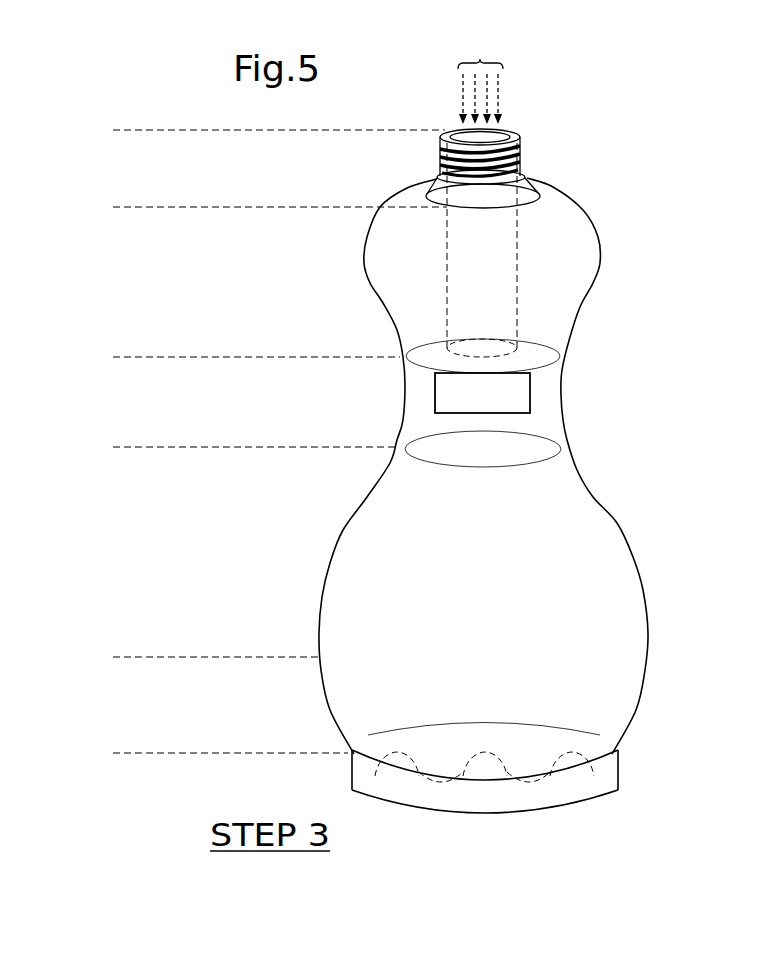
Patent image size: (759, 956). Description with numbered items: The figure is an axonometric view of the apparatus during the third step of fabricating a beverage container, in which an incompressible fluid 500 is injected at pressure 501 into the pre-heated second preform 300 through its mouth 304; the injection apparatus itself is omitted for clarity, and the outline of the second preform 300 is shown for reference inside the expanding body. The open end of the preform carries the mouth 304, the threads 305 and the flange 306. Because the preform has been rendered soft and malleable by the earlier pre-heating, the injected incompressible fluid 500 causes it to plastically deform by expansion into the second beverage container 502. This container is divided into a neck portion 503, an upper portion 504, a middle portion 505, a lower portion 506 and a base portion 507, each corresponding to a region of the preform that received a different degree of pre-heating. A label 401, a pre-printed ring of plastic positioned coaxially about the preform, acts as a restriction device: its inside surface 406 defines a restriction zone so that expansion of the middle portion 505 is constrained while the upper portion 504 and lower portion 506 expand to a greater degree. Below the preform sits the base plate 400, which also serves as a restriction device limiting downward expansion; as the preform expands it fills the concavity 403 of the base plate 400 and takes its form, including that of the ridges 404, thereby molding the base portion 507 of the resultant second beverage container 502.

The pressure 501 is at (480, 61).
The mouth 304 is at (460, 130).
The threads 305 is at (527, 140).
The flange 306 is at (533, 170).
The incompressible fluid 500 is at (541, 183).
The second beverage container 502 is at (598, 223).
The second preform 300 is at (521, 255).
The inside surface 406 is at (539, 353).
The label 401 is at (556, 390).
The ridges 404 is at (398, 750).
The concavity 403 is at (623, 740).
The base plate 400 is at (598, 805).
The neck portion 503 is at (280, 168).
The upper portion 504 is at (256, 314).
The middle portion 505 is at (255, 419).
The lower portion 506 is at (215, 598).
The base portion 507 is at (230, 723).